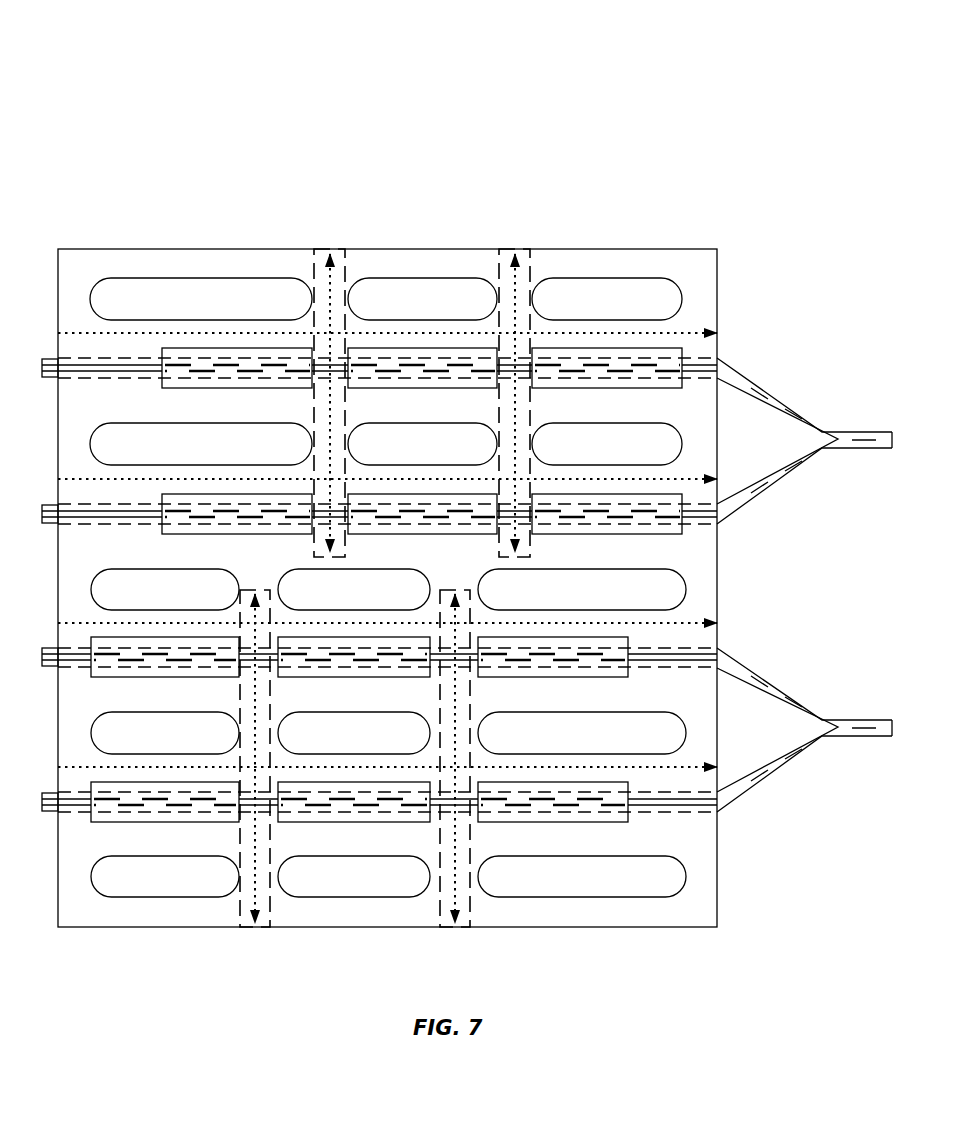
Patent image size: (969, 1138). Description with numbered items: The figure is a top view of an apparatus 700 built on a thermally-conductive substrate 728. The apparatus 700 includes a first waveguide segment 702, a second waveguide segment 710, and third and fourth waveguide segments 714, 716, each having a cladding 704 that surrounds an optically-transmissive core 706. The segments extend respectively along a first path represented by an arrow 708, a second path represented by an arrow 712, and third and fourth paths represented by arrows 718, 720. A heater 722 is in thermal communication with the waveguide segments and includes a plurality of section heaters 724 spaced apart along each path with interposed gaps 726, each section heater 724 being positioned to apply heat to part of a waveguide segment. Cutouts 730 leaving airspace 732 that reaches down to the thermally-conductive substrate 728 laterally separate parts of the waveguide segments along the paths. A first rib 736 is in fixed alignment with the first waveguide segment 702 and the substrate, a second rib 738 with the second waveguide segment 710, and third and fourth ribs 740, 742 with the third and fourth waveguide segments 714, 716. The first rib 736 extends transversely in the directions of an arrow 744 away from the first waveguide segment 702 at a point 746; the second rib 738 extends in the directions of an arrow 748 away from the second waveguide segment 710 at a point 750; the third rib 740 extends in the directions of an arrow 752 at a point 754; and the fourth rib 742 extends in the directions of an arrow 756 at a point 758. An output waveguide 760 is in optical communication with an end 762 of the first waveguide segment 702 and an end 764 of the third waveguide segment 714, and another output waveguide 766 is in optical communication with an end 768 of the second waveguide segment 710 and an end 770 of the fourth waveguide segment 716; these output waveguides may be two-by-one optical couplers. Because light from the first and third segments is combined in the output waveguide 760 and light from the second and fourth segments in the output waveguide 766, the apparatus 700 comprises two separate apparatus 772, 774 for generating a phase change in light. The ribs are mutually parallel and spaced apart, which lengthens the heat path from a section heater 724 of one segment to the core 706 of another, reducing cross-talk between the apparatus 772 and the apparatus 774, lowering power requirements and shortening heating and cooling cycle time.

The apparatus 700 is at (667, 135).
The first waveguide segment 702 is at (810, 461).
The cladding 704 is at (798, 424).
The optically-transmissive core 706 is at (766, 394).
The arrow 708 is at (672, 479).
The second waveguide segment 710 is at (697, 648).
The arrow 712 is at (683, 622).
The third waveguide segment 714 is at (697, 358).
The fourth waveguide segment 716 is at (700, 817).
The arrow 718 is at (680, 333).
The arrow 720 is at (683, 768).
The heater 722 is at (212, 348).
The section heater 724 is at (615, 825).
The gap 726 is at (527, 408).
The thermally-conductive substrate 728 is at (630, 311).
The cutout 730 is at (643, 313).
The airspace 732 is at (137, 298).
The first rib 736 is at (342, 282).
The second rib 738 is at (246, 927).
The third rib 740 is at (527, 283).
The fourth rib 742 is at (447, 930).
The arrow 744 is at (350, 346).
The point 746 is at (352, 358).
The arrow 748 is at (254, 872).
The point 750 is at (235, 822).
The arrow 752 is at (533, 346).
The point 754 is at (534, 340).
The arrow 756 is at (462, 832).
The point 758 is at (478, 828).
The output waveguide 760 is at (814, 476).
The end 762 is at (724, 536).
The end 764 is at (730, 346).
The output waveguide 766 is at (820, 764).
The end 768 is at (737, 641).
The end 770 is at (737, 824).
The apparatus 772 is at (187, 213).
The apparatus 774 is at (626, 996).